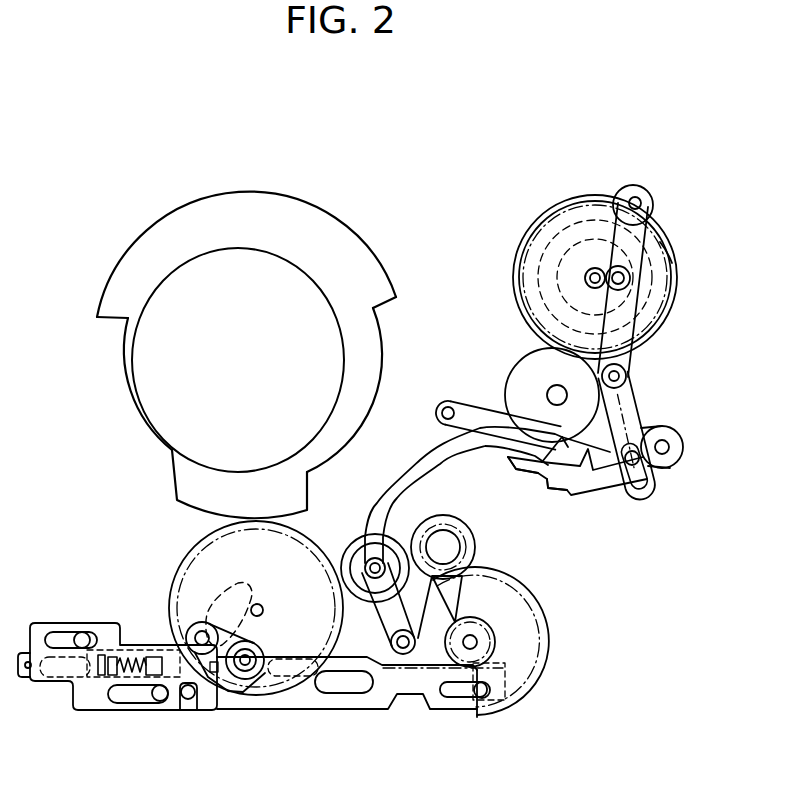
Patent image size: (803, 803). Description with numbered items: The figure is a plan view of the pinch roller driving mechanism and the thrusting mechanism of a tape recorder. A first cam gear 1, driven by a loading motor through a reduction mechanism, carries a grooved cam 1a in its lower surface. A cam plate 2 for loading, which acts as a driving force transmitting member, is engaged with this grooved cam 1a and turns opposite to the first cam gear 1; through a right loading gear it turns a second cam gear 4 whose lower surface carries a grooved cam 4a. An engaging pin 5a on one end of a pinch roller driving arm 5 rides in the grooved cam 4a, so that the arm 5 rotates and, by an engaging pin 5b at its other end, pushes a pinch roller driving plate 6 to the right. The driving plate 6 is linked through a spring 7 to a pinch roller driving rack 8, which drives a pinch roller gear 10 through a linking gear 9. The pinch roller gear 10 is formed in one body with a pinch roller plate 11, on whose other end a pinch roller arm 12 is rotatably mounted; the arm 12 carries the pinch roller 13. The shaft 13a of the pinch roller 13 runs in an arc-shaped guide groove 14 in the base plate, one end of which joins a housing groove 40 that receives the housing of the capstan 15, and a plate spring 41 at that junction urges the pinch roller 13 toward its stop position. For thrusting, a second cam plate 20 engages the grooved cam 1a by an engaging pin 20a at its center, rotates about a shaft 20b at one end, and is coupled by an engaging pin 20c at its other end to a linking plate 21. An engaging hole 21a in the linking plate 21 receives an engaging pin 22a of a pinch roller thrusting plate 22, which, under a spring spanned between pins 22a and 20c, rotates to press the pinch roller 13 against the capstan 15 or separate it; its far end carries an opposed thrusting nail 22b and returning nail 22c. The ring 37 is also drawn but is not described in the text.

The first cam gear 1 is at (677, 272).
The grooved cam 1a is at (658, 240).
The cam plate 2 is at (641, 416).
The second cam gear 4 is at (190, 562).
The grooved cam 4a is at (220, 612).
The pinch roller driving arm 5 is at (264, 611).
The engaging pin 5a is at (263, 653).
The engaging pin 5b is at (190, 712).
The pinch roller driving plate 6 is at (78, 712).
The spring 7 is at (128, 656).
The pinch roller driving rack 8 is at (303, 700).
The linking gear 9 is at (528, 633).
The pinch roller gear 10 is at (476, 546).
The pinch roller plate 11 is at (452, 620).
The pinch roller arm 12 is at (382, 615).
The pinch roller 13 is at (363, 535).
The shaft 13a is at (366, 565).
The guide groove 14 is at (438, 462).
The capstan 15 is at (547, 395).
The cam plate 20 is at (625, 332).
The engaging pin 20a is at (612, 272).
The shaft 20b is at (625, 184).
The engaging pin 20c is at (627, 375).
The linking plate 21 is at (635, 393).
The engaging hole 21a is at (646, 488).
The pinch roller thrusting plate 22 is at (590, 485).
The engaging pin 22a is at (618, 488).
The thrusting nail 22b is at (550, 480).
The returning nail 22c is at (537, 472).
The lens ring 37 is at (306, 290).
The housing groove 40 is at (522, 360).
The plate spring 41 is at (457, 402).